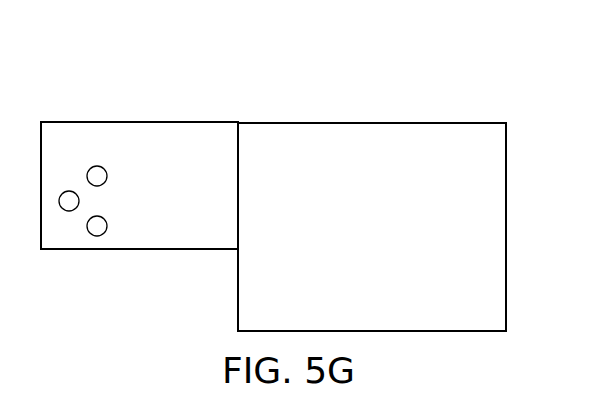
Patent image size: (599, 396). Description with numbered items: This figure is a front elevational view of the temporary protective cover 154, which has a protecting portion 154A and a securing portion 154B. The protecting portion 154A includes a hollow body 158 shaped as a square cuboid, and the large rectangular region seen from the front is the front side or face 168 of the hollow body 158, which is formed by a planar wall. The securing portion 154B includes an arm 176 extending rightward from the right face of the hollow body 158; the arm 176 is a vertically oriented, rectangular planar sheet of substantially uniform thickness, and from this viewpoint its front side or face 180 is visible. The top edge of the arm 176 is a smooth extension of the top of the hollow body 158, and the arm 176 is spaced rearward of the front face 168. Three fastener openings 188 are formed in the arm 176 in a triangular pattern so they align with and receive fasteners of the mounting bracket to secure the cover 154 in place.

The temporary protective cover 154 is at (468, 102).
The protecting portion 154A is at (365, 117).
The securing portion 154B is at (118, 118).
The arm 176 is at (177, 122).
The body 158 is at (290, 123).
The front side or face 180 is at (178, 196).
The front side or face 168 is at (375, 216).
The fastener openings 188 is at (97, 230).